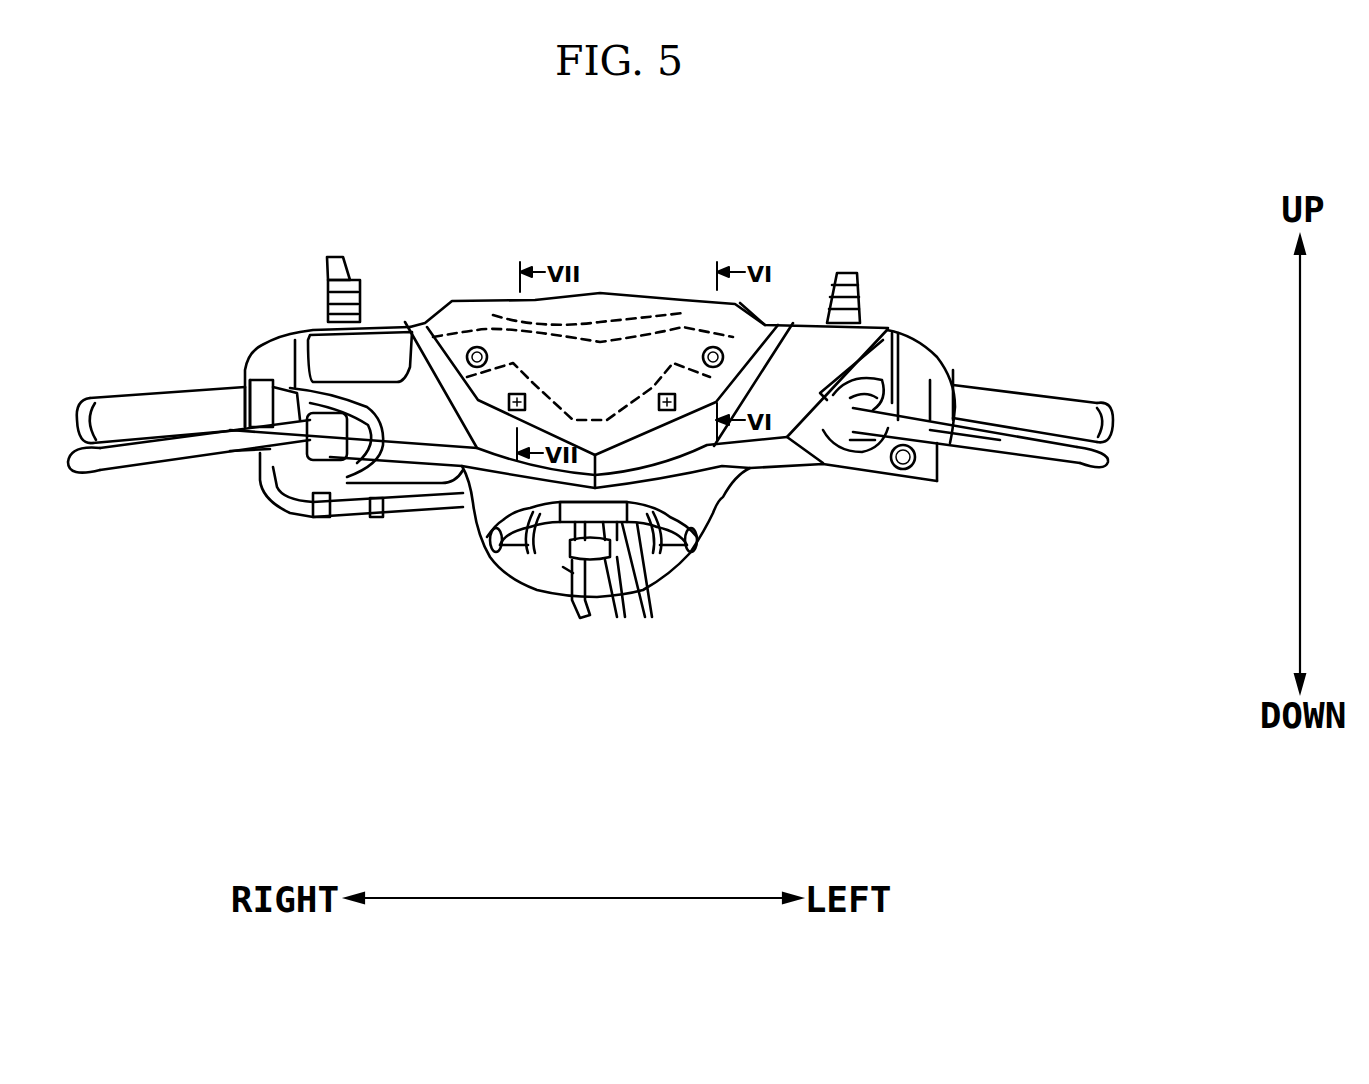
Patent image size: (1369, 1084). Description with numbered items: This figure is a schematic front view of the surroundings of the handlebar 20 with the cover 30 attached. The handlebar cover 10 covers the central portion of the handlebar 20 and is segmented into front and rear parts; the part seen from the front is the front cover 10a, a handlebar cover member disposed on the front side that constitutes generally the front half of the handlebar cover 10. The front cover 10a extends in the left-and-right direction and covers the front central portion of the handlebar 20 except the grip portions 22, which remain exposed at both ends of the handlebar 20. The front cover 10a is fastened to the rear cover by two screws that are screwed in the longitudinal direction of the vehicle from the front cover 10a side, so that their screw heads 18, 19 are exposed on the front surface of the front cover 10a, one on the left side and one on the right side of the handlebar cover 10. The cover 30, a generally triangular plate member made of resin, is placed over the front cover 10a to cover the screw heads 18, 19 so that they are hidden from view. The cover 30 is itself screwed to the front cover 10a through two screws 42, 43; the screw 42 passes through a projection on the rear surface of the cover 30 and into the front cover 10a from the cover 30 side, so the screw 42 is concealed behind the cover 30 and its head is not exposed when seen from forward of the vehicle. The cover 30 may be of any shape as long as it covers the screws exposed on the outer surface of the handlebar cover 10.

The handlebar cover 10 is at (880, 322).
The front cover 10a is at (783, 347).
The cover 30 is at (447, 318).
The screw head 19 is at (478, 347).
The screw head 18 is at (710, 347).
The screw 42 is at (527, 397).
The screw 43 is at (653, 397).
The handlebar 20 is at (177, 390).
The grip portions 22 is at (133, 407).